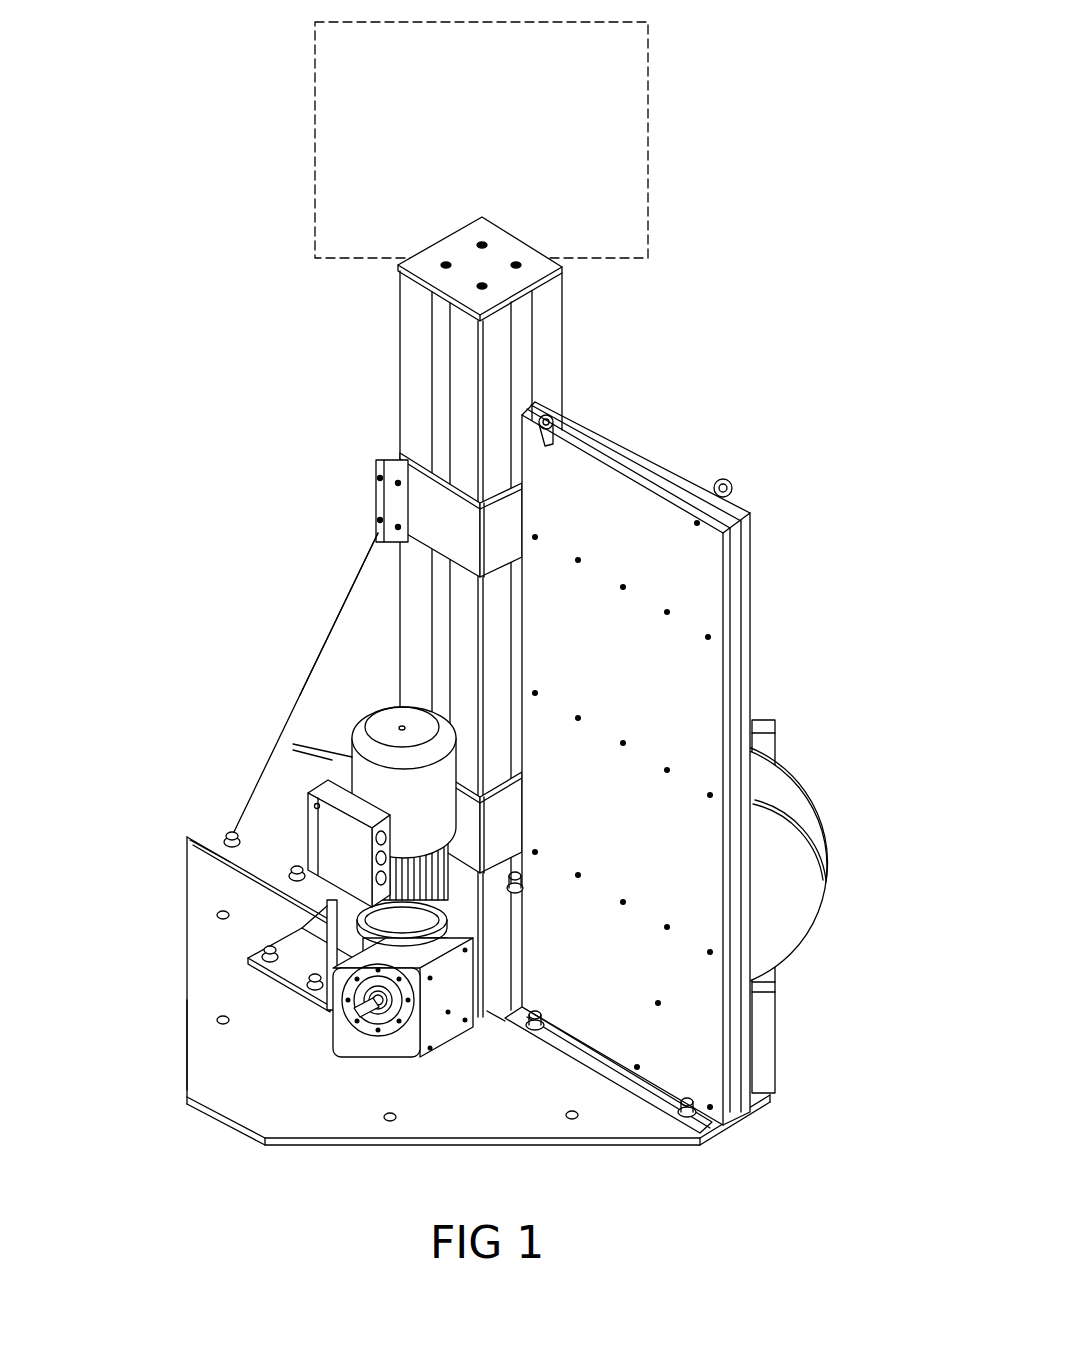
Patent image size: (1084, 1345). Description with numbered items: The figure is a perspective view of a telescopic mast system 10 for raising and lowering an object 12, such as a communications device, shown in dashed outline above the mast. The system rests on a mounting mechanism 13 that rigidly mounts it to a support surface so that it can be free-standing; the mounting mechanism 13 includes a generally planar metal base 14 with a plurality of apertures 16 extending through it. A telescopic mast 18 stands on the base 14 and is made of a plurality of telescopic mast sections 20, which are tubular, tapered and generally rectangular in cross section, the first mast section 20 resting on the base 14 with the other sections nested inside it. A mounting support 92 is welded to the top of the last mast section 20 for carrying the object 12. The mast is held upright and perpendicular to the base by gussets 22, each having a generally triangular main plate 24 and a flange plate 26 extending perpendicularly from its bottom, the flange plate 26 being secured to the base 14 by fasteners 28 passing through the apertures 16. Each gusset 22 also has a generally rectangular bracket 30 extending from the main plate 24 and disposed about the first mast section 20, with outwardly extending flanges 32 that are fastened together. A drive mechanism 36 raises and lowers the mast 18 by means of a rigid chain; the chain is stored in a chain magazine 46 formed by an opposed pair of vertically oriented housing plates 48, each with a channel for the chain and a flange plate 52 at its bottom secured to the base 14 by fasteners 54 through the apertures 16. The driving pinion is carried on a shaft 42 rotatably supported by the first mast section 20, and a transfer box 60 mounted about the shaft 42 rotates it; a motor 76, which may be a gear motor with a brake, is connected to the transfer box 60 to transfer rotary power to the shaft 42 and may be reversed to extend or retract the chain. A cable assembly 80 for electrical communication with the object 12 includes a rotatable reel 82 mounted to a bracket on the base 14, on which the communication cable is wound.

The telescopic mast system 10 is at (724, 354).
The object 12 is at (662, 121).
The mounting mechanism 13 is at (180, 998).
The base 14 is at (264, 1112).
The apertures 16 is at (568, 1113).
The telescopic mast 18 is at (438, 608).
The telescopic mast sections 20 is at (548, 338).
The gussets 22 is at (346, 585).
The main plate 24 is at (348, 630).
The flange plate 26 is at (203, 837).
The fasteners 28 is at (228, 836).
The bracket 30 is at (424, 520).
The flanges 32 is at (393, 454).
The drive mechanism 36 is at (349, 788).
The shaft 42 is at (368, 1010).
The chain magazine 46 is at (674, 759).
The housing plates 48 is at (712, 582).
The flange plate 52 is at (700, 1112).
The fasteners 54 is at (703, 1132).
The transfer box 60 is at (386, 1008).
The motor 76 is at (360, 773).
The cable assembly 80 is at (796, 766).
The rotatable reel 82 is at (803, 890).
The mounting support 92 is at (530, 258).